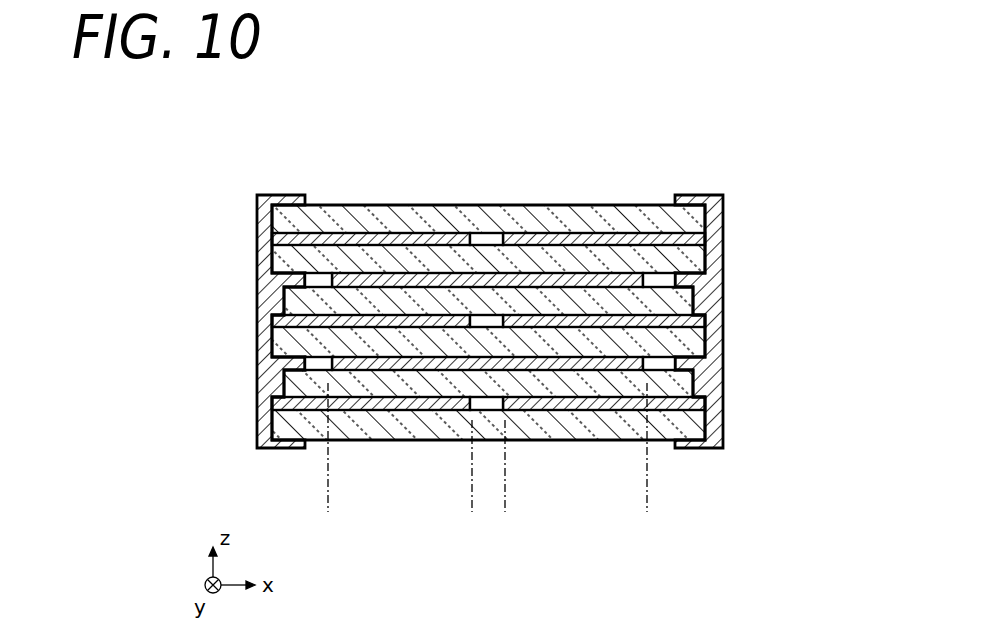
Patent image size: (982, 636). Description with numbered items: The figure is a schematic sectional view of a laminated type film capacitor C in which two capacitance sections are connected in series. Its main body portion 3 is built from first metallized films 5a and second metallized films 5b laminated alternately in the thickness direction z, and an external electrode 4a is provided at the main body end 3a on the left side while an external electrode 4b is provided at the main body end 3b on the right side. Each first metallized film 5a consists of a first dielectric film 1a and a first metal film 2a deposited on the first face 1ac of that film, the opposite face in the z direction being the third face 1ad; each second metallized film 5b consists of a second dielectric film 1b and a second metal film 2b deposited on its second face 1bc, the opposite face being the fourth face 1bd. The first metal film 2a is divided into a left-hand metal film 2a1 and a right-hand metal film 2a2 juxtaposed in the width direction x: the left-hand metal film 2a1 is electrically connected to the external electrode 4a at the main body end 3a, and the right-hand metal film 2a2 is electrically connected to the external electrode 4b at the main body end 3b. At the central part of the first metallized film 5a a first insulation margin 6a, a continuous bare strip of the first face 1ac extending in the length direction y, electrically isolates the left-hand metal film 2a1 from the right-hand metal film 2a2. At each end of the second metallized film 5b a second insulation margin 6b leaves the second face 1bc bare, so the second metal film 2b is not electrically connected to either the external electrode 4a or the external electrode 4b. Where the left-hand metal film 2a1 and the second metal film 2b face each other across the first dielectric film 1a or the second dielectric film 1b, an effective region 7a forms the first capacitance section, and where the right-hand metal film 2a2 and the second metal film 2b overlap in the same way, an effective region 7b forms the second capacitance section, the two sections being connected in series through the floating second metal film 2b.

The film capacitor C is at (676, 78).
The main body portion 3 is at (493, 230).
The main body end 3a is at (270, 188).
The main body end 3b is at (705, 188).
The external electrode 4a is at (257, 226).
The external electrode 4b is at (715, 228).
The first metallized film 5a is at (338, 120).
The second metallized film 5b is at (596, 259).
The first dielectric film 1a is at (497, 279).
The second dielectric film 1b is at (582, 305).
The first face 1ac is at (275, 241).
The third face 1ad is at (300, 281).
The second face 1bc is at (700, 282).
The fourth face 1bd is at (705, 323).
The first metal film 2a is at (486, 264).
The left-hand metal film 2a1 is at (327, 264).
The right-hand metal film 2a2 is at (626, 264).
The second metal film 2b is at (612, 310).
The first insulation margin 6a is at (482, 320).
The second insulation margin 6b is at (320, 282).
The effective region 7a is at (328, 515).
The effective region 7b is at (505, 515).